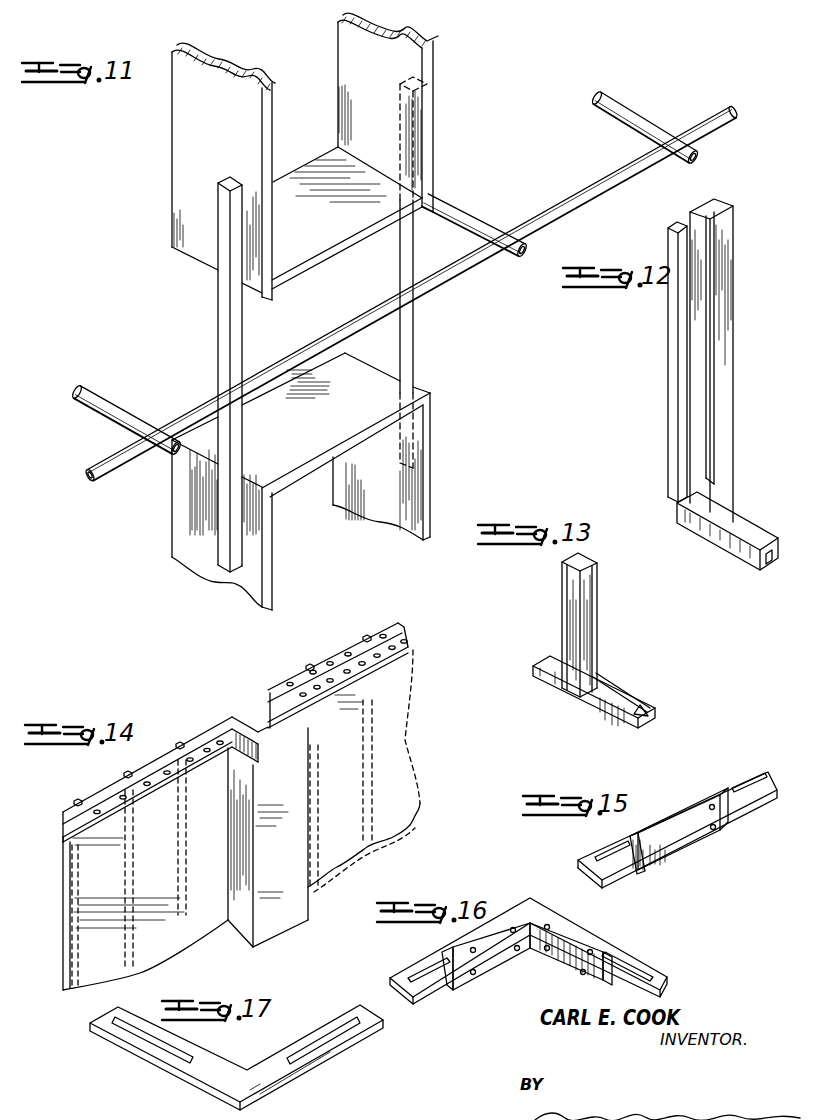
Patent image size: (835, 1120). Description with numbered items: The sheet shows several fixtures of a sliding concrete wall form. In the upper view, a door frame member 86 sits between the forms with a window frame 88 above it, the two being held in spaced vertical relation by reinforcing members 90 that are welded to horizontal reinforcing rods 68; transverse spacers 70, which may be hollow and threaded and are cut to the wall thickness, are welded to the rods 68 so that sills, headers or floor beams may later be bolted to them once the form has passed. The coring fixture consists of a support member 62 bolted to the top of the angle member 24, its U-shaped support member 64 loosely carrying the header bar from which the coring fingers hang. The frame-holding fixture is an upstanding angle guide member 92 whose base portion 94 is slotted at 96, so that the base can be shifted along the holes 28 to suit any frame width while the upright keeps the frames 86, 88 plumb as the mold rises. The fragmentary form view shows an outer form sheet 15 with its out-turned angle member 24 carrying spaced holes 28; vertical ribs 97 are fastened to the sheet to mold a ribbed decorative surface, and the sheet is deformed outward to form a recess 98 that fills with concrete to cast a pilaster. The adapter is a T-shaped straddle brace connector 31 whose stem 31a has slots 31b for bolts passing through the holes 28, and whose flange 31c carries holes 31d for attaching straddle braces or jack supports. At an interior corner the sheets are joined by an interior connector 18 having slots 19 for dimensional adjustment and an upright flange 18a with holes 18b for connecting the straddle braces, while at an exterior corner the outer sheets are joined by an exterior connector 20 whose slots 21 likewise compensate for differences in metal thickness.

In FIG. 14, the outer form sheets 15 is at (396, 768).
In FIG. 16, the interior connectors 18 is at (528, 959).
In FIG. 16, the flange 18a is at (492, 962).
In FIG. 16, the holes 18b is at (550, 947).
In FIG. 16, the slots 19 is at (640, 962).
In FIG. 17, the exterior connectors 20 is at (216, 1078).
In FIG. 17, the slots 21 is at (350, 1030).
In FIG. 14, the out-turned angle members 24 is at (407, 649).
In FIG. 14, the holes 28 is at (402, 631).
In FIG. 15, the straddle brace connectors 31 is at (669, 801).
In FIG. 15, the stems 31a is at (628, 834).
In FIG. 15, the slots 31b is at (778, 728).
In FIG. 15, the flanges 31c is at (690, 838).
In FIG. 15, the holes 31d is at (716, 826).
In FIG. 12, the support member 62 is at (740, 544).
In FIG. 12, the U-shaped support members 64 is at (670, 300).
In FIG. 11, the horizontal reinforcing rods 68 is at (594, 190).
In FIG. 11, the transverse spacers 70 is at (79, 406).
In FIG. 11, the door frame member 86 is at (427, 488).
In FIG. 11, the window frame 88 is at (433, 88).
In FIG. 11, the reinforcing members 90 is at (218, 328).
In FIG. 13, the upstanding angle guide members 92 is at (588, 612).
In FIG. 13, the base portion 94 is at (608, 687).
In FIG. 13, the slots 96 is at (648, 710).
In FIG. 14, the vertical ribs 97 is at (178, 740).
In FIG. 14, the recess 98 is at (260, 712).